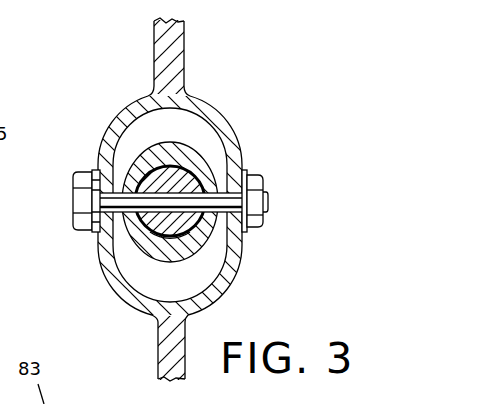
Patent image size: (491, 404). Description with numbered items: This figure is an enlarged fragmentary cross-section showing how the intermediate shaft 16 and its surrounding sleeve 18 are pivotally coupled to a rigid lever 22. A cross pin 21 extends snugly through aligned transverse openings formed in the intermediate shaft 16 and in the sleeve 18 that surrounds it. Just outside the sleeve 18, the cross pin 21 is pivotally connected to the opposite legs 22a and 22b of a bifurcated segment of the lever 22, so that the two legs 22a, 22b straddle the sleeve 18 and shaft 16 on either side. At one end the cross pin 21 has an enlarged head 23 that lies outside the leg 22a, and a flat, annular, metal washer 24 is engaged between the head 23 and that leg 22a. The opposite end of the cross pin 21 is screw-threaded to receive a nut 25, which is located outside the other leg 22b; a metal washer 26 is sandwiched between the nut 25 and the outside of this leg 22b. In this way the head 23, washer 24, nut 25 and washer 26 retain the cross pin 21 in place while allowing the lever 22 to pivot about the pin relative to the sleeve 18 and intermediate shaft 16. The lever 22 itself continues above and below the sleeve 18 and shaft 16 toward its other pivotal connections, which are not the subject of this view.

The rigid lever 22 is at (185, 58).
The leg of lever 22a is at (125, 110).
The leg of lever 22b is at (230, 122).
The cross pin 21 is at (123, 198).
The intermediate shaft 16 is at (155, 244).
The sleeve 18 is at (193, 254).
The enlarged head 23 is at (73, 198).
The metal washer 24 is at (95, 229).
The nut 25 is at (263, 223).
The metal washer 26 is at (243, 180).